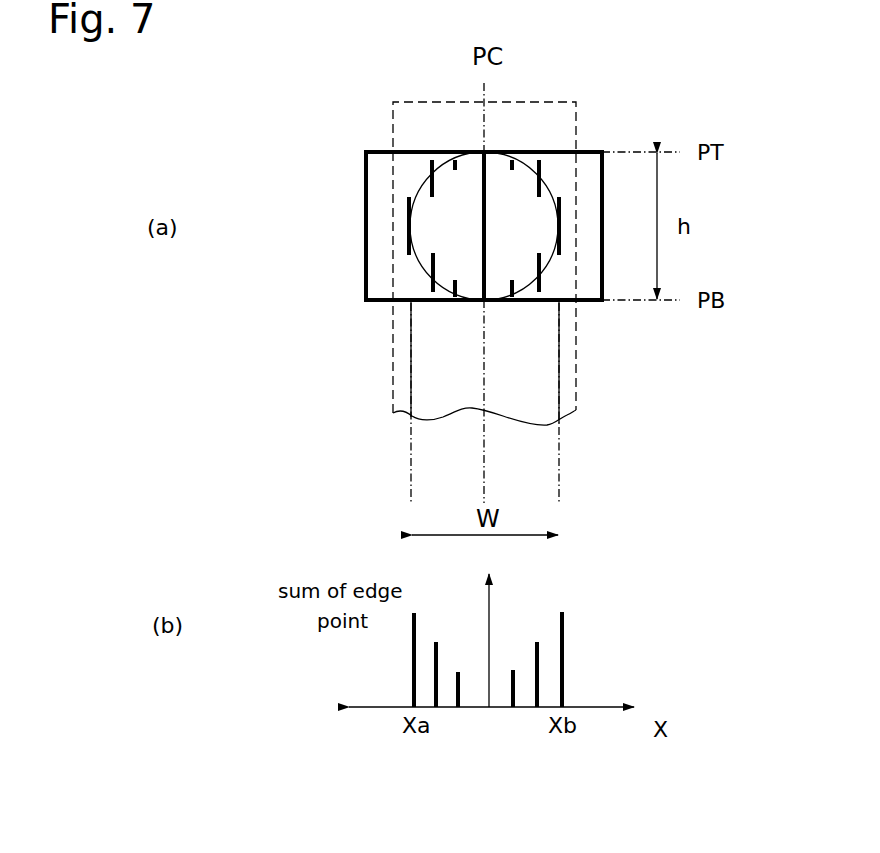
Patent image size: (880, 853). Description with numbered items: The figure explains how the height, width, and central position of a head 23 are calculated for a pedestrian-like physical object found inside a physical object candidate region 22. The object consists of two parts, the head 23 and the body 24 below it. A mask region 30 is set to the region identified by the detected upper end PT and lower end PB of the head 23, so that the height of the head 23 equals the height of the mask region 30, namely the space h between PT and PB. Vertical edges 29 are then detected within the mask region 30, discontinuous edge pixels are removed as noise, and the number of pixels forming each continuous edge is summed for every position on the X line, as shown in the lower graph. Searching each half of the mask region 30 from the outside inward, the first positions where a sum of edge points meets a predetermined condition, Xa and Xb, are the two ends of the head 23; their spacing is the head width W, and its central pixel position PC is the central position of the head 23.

The physical object candidate region 22 is at (580, 385).
The head 23 is at (423, 268).
The body 24 is at (427, 389).
The vertical edges 29 is at (540, 280).
The mask region 30 is at (365, 185).